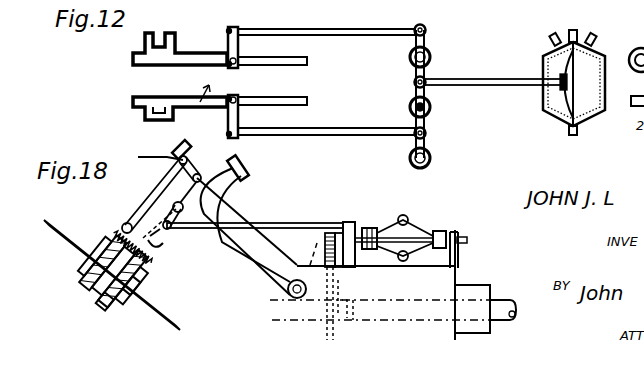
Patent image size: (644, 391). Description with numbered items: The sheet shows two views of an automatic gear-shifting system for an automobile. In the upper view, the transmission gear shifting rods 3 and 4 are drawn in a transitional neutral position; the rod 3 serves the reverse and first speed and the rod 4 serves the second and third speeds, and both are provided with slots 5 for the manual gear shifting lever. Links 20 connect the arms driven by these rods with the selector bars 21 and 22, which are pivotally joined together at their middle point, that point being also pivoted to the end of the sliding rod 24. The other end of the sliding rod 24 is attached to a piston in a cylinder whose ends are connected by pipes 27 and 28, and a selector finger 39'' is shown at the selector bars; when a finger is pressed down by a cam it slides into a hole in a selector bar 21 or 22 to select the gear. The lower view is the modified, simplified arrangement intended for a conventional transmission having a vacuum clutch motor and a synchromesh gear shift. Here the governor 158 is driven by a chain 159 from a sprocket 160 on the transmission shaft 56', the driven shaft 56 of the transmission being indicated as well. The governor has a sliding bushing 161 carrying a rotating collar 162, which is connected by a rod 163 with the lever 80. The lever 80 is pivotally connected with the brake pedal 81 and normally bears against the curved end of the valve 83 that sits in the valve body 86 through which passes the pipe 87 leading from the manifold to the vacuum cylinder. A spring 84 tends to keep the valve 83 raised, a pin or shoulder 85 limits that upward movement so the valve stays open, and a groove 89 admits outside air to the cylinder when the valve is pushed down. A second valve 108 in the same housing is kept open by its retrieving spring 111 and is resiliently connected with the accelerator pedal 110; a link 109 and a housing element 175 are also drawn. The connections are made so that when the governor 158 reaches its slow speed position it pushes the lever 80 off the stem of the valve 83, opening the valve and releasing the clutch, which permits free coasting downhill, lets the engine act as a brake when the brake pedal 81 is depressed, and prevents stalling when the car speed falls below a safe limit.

In FIG. 12, the gear shifting rod 3 is at (197, 57).
In FIG. 12, the slot 5 is at (160, 60).
In FIG. 12, the gear shifting rod 4 is at (206, 87).
In FIG. 12, the link 20 is at (323, 28).
In FIG. 12, the selector bar 21 is at (425, 31).
In FIG. 12, the selector bar 22 is at (426, 131).
In FIG. 12, the sliding rod 24 is at (473, 80).
In FIG. 12, the selector finger 39'' is at (438, 106).
In FIG. 12, the pipe 27 is at (553, 42).
In FIG. 12, the pipe 28 is at (596, 43).
In FIG. 12, the diaphragm housing 175 is at (636, 55).
In FIG. 18, the brake pedal 81 is at (247, 170).
In FIG. 18, the accelerator pedal 110 is at (183, 147).
In FIG. 18, the link 109 is at (155, 197).
In FIG. 18, the lever or rod 80 is at (160, 237).
In FIG. 18, the rod 163 is at (312, 223).
In FIG. 18, the pipe 87 is at (70, 236).
In FIG. 18, the retrieving spring 111 is at (112, 236).
In FIG. 18, the valve body 86 is at (80, 273).
In FIG. 18, the second valve 108 is at (84, 283).
In FIG. 18, the valve 83 is at (118, 303).
In FIG. 18, the pin or shoulder 85 is at (100, 302).
In FIG. 18, the spring 84 is at (140, 270).
In FIG. 18, the groove 89 is at (139, 281).
In FIG. 18, the rotating collar 162 is at (366, 249).
In FIG. 18, the chain 159 is at (344, 223).
In FIG. 18, the sliding bushing 161 is at (374, 250).
In FIG. 18, the governor 158 is at (410, 220).
In FIG. 18, the driven shaft 56 is at (488, 302).
In FIG. 18, the transmission shaft 56' is at (380, 321).
In FIG. 18, the sprocket 160 is at (347, 330).